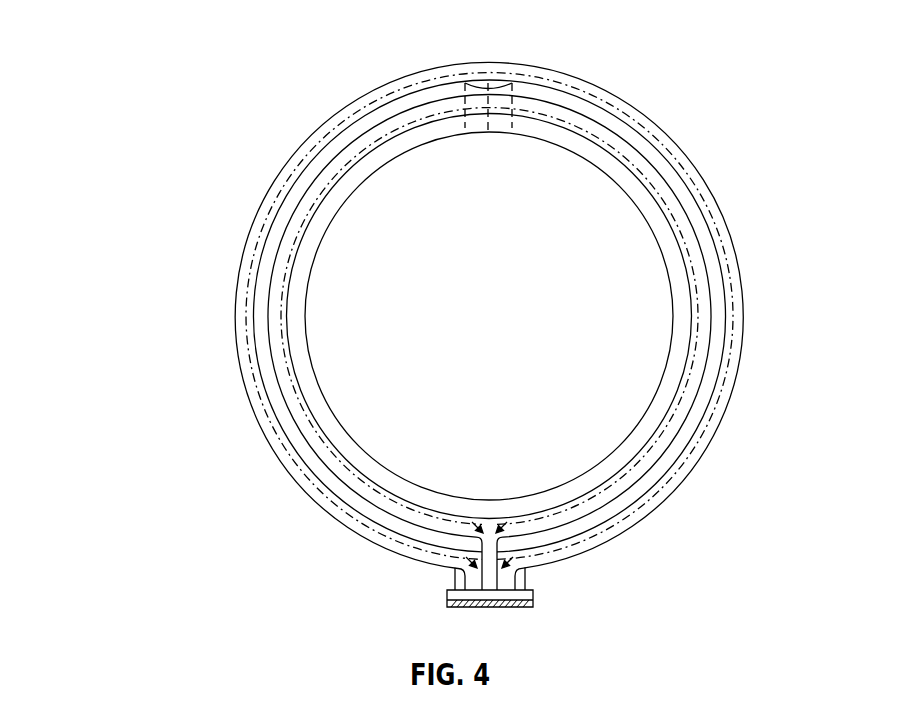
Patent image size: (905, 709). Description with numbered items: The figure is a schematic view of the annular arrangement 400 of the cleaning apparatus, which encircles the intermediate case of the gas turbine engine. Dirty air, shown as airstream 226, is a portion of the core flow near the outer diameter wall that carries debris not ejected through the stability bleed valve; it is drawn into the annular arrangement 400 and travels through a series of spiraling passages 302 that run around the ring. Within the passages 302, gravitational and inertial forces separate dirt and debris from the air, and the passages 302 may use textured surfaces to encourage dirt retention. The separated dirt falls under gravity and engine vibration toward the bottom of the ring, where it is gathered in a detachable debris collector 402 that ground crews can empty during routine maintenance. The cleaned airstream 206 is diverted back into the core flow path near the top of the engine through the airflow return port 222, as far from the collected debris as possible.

The annular arrangement 400 is at (168, 46).
The airflow return port 222 is at (473, 82).
The cleaned airstream 206 is at (482, 138).
The airstream 226 is at (243, 266).
The spiraling passages 302 is at (288, 377).
The detachable debris collector 402 is at (447, 598).